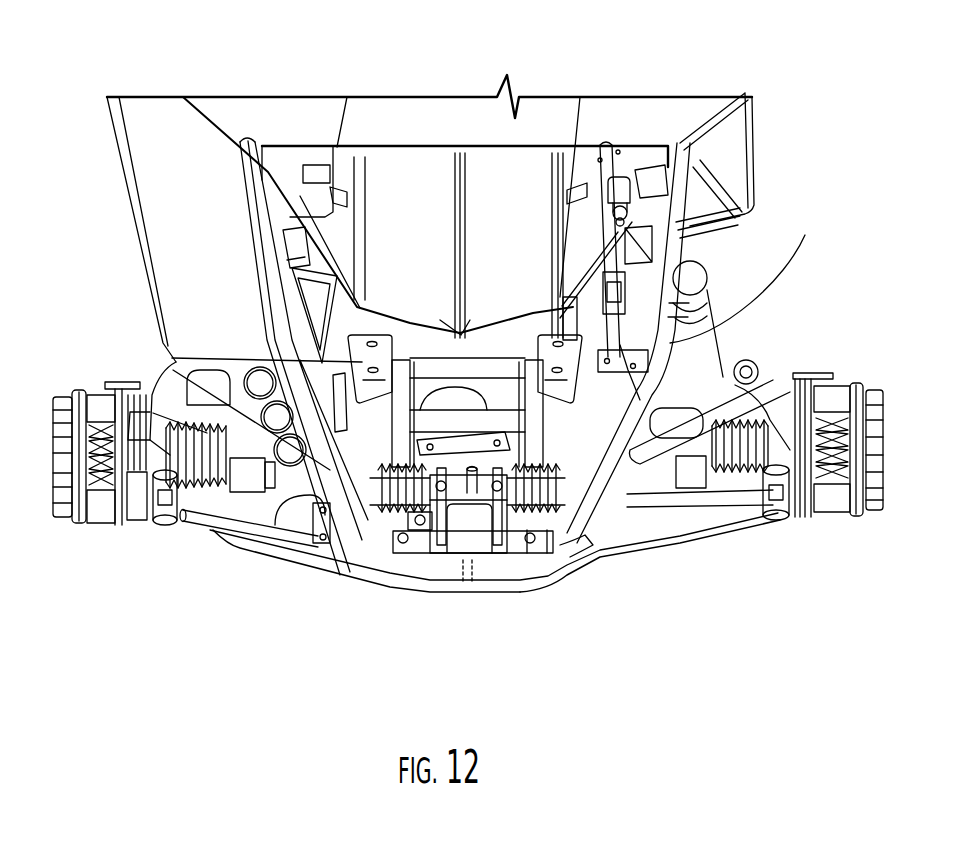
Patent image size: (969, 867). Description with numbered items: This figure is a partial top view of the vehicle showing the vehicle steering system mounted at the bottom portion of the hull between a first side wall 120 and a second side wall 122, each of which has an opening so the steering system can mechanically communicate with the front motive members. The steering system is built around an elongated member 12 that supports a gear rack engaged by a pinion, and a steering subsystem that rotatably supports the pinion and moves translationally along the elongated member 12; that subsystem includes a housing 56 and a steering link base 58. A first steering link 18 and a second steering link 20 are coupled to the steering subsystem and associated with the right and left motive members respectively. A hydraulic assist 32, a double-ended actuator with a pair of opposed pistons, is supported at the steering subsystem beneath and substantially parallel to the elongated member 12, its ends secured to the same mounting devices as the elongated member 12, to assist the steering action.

The elongated member 12 is at (357, 522).
The first steering link 18 is at (267, 533).
The second steering link 20 is at (693, 543).
The hydraulic assist 32 is at (418, 522).
The housing 56 is at (487, 483).
The steering link base 58 is at (470, 543).
The first side wall 120 is at (277, 330).
The second side wall 122 is at (670, 340).